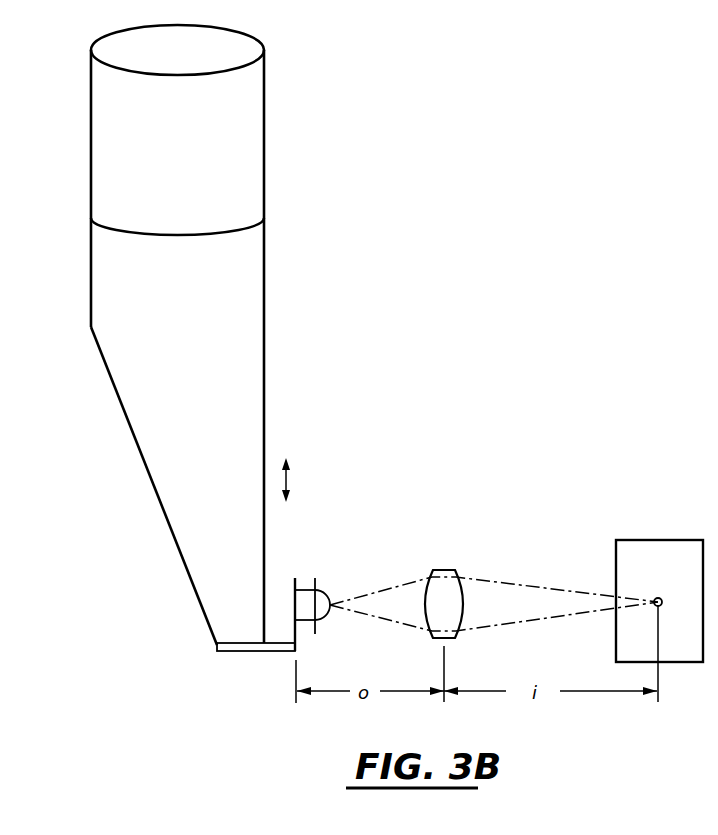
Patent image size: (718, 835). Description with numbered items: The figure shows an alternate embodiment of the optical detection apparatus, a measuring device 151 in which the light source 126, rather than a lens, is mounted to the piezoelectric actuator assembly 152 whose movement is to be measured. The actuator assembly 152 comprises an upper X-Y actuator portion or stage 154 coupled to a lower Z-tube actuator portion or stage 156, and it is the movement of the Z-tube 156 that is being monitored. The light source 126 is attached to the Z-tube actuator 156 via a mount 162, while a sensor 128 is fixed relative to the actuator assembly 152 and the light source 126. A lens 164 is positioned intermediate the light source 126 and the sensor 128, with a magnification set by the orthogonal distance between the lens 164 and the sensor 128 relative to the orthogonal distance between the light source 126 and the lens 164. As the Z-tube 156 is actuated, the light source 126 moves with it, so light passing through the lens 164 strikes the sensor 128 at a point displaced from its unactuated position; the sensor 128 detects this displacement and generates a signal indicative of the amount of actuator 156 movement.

The light source 126 is at (318, 588).
The sensor 128 is at (660, 540).
The measuring device 151 is at (557, 494).
The piezoelectric actuator assembly 152 is at (302, 292).
The upper X-Y actuator portion 154 is at (264, 122).
The lower Z-tube actuator portion 156 is at (264, 358).
The mount 162 is at (287, 651).
The lens 164 is at (445, 570).